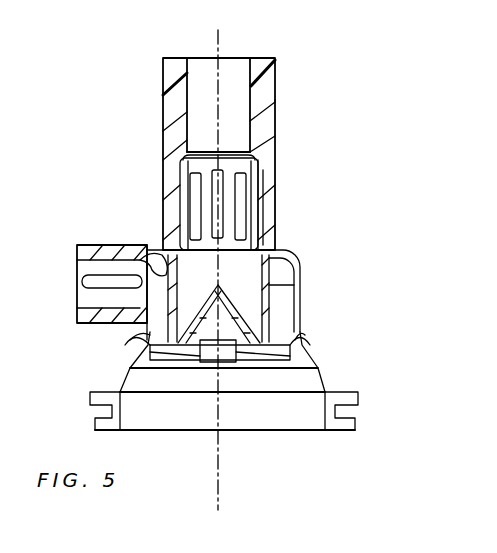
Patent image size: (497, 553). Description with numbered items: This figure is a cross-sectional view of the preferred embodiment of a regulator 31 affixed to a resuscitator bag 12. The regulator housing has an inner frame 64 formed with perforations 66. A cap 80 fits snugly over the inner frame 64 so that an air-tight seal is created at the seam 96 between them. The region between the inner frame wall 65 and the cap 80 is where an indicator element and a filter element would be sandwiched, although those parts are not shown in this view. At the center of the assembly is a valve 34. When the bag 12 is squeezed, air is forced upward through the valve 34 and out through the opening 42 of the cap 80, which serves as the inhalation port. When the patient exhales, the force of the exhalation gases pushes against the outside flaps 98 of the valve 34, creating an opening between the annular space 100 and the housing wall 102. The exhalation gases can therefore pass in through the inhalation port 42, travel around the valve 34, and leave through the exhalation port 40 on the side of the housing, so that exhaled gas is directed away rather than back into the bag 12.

The resuscitator bag 12 is at (118, 388).
The regulator 31 is at (332, 102).
The valve 34 is at (242, 300).
The exhalation port 40 is at (77, 300).
The opening of cap / inhalation port 42 is at (230, 66).
The inner frame 64 is at (264, 192).
The inner frame wall 65 is at (180, 162).
The perforations 66 is at (192, 196).
The cap 80 is at (165, 92).
The seam 96 is at (258, 165).
The outside flaps 98 is at (200, 300).
The annular space 100 is at (126, 346).
The housing wall 102 is at (160, 258).